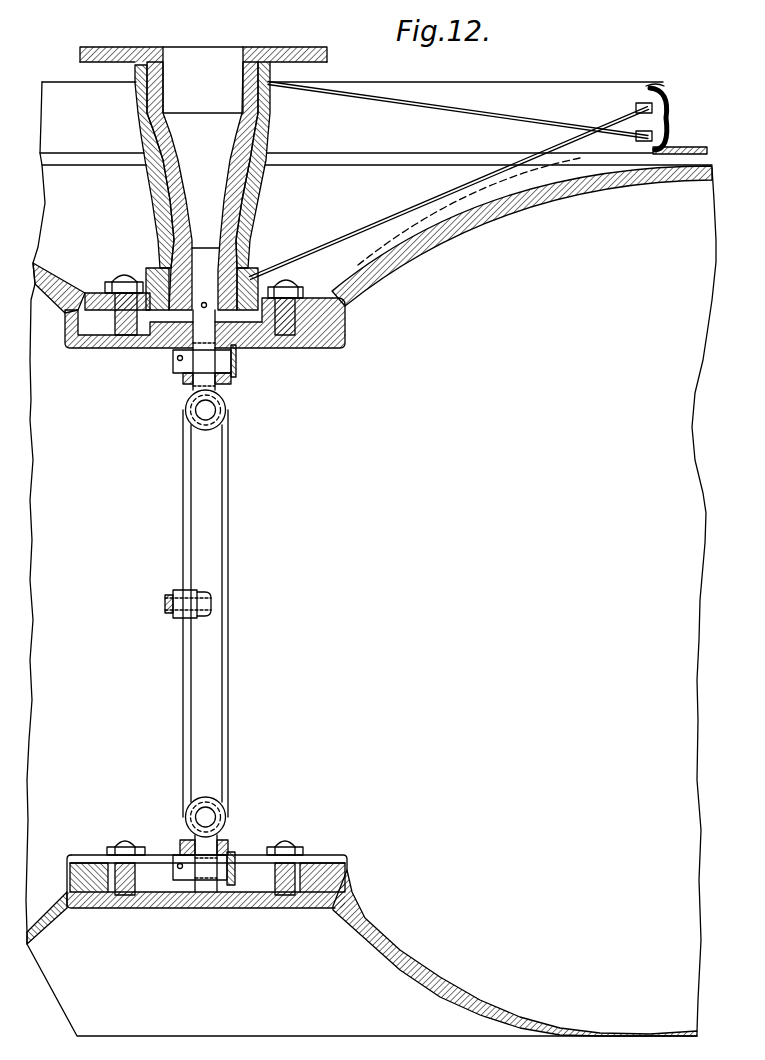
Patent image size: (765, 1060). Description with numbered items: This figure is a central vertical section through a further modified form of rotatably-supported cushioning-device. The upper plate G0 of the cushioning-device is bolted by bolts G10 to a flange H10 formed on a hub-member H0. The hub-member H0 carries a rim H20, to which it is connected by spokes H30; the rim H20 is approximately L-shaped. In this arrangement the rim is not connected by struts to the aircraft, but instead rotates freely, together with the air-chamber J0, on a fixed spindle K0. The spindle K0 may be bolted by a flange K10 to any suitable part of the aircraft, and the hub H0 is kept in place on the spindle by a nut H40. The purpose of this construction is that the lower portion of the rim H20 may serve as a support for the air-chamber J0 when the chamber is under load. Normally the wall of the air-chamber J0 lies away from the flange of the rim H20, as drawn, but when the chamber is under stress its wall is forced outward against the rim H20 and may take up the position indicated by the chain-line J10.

The flange K10 is at (128, 47).
The fixed spindle K0 is at (175, 183).
The hub-member H0 is at (250, 197).
The nut H40 is at (160, 272).
The flange H10 is at (346, 300).
The rim H20 is at (705, 147).
The spokes H30 is at (473, 183).
The air-chamber J0 is at (452, 221).
The chain-line J10 is at (524, 173).
The upper plate G0 is at (287, 349).
The bolts G10 is at (323, 349).